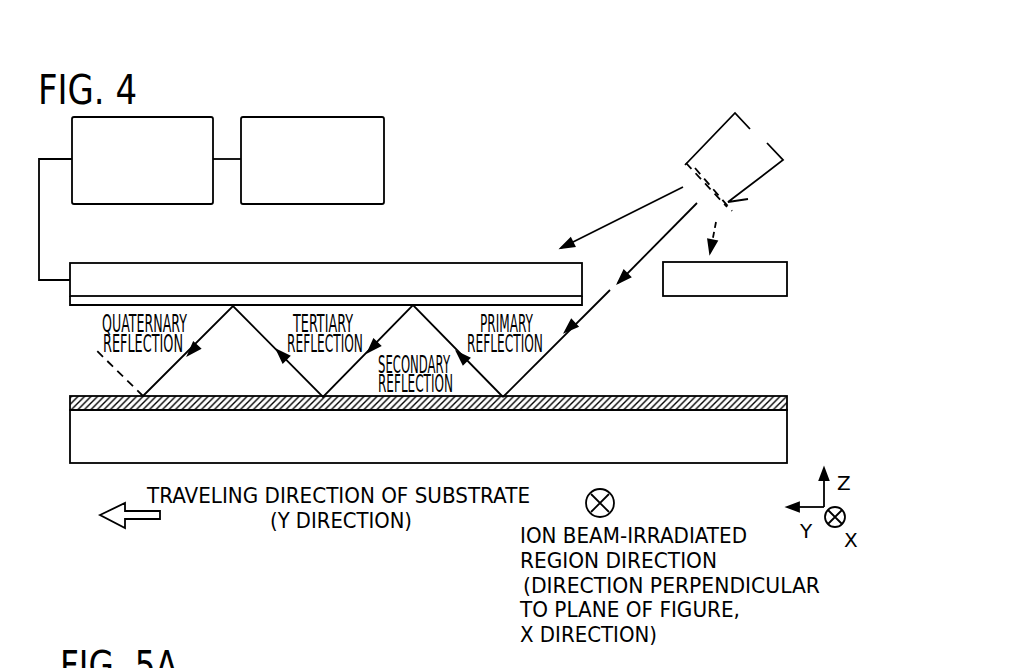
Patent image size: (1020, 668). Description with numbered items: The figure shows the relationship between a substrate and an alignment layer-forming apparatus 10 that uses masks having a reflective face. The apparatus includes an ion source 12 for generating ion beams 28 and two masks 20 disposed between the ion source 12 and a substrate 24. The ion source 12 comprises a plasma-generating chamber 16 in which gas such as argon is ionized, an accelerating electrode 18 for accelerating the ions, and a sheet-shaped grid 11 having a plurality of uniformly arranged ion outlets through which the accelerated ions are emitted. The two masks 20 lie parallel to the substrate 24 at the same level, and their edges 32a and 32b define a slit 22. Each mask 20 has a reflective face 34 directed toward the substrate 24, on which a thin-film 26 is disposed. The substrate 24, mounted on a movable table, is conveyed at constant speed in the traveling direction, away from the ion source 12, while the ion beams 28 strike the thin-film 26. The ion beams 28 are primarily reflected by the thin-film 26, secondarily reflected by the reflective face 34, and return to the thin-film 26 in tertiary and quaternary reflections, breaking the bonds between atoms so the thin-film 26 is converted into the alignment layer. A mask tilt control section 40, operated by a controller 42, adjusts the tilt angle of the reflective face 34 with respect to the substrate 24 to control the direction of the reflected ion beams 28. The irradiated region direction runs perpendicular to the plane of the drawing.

The alignment layer-forming apparatus 10 is at (508, 158).
The grid 11 is at (767, 133).
The ion source 12 is at (707, 122).
The plasma-generating chamber 16 is at (757, 166).
The accelerating electrode 18 is at (748, 199).
The mask 20 is at (95, 272).
The slit 22 is at (614, 282).
The substrate 24 is at (777, 435).
The thin-film 26 is at (788, 402).
The ion beams 28 is at (668, 226).
The edge of mask 32a is at (588, 269).
The edge of mask 32b is at (660, 289).
The reflective face 34 is at (68, 306).
The mask tilt control section 40 is at (172, 204).
The controller 42 is at (302, 204).